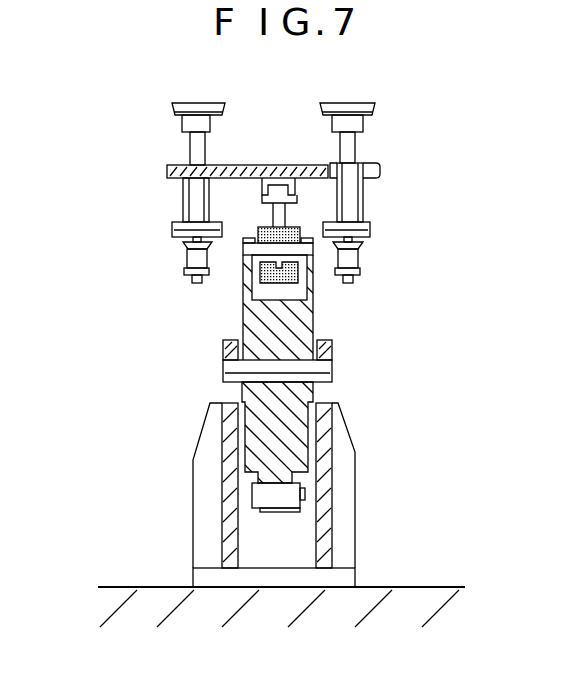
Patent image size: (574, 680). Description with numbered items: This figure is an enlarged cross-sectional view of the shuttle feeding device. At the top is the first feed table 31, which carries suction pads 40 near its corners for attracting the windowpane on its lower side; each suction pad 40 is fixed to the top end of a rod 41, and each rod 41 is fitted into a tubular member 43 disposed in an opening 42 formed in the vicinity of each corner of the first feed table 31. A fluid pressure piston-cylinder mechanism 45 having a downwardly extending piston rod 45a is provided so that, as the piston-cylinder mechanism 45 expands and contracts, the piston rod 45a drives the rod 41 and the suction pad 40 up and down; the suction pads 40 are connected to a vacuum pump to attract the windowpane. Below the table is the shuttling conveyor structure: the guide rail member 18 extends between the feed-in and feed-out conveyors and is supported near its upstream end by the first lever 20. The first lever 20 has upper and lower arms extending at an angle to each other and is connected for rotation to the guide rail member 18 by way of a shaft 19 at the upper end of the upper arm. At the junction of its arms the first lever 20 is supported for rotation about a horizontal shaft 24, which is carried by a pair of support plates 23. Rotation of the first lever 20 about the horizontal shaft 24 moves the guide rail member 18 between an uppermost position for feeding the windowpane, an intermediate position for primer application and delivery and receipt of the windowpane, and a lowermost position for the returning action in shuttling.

The guide rail member 18 is at (268, 220).
The shaft 19 is at (242, 253).
The first lever 20 is at (312, 315).
The support plates 23 is at (200, 525).
The horizontal shaft 24 is at (322, 370).
The first feed table 31 is at (178, 162).
The suction pad 40 is at (211, 101).
The rod 41 is at (207, 145).
The opening 42 is at (332, 164).
The tubular member 43 is at (181, 200).
The fluid pressure piston-cylinder mechanism 45 is at (210, 201).
The piston rod 45a is at (188, 237).